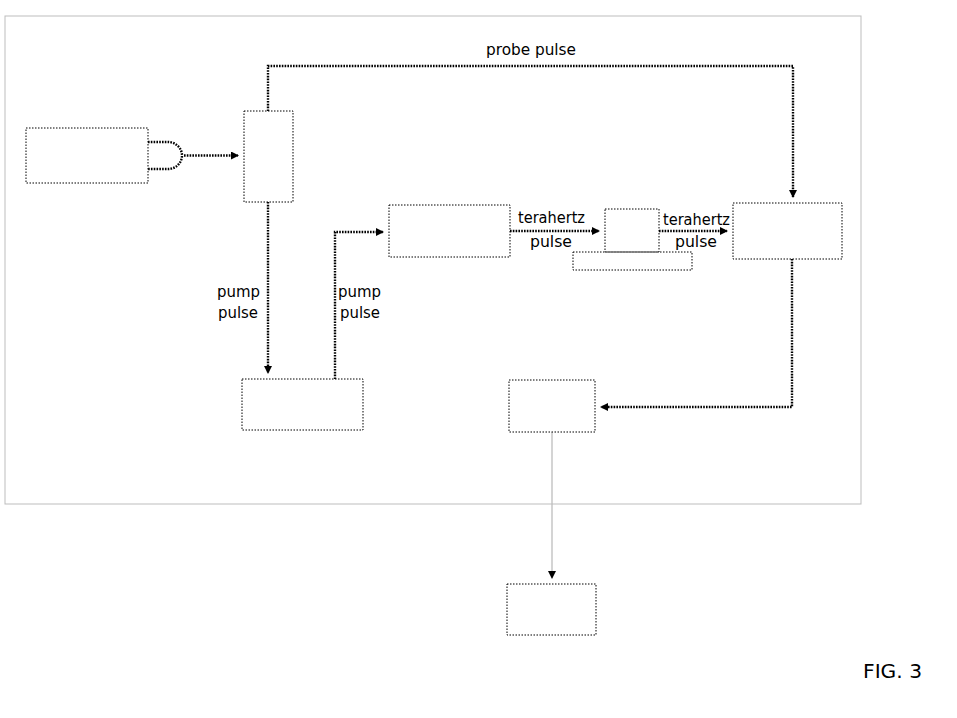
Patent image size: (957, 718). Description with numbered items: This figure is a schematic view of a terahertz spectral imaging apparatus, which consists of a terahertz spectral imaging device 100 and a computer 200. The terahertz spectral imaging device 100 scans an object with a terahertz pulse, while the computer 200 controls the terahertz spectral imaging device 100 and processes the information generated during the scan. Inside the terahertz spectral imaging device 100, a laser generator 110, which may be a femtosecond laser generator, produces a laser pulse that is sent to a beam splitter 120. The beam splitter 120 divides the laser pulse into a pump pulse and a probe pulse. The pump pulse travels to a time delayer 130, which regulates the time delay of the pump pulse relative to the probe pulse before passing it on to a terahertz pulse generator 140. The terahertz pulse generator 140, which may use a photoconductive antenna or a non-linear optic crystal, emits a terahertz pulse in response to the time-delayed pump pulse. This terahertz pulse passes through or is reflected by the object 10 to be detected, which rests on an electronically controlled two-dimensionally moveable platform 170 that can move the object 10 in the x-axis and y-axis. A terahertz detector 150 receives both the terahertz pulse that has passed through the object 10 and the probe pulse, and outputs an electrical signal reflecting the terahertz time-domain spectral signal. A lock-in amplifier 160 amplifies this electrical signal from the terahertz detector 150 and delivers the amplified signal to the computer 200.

The terahertz spectral imaging device 100 is at (130, 506).
The laser generator 110 is at (58, 128).
The beam splitter 120 is at (320, 140).
The time delayer 130 is at (273, 432).
The terahertz pulse generator 140 is at (432, 258).
The object to be detected 10 is at (619, 218).
The electronically controlled two-dimensionally moveable platform 170 is at (617, 262).
The terahertz detector 150 is at (753, 262).
The lock-in amplifier 160 is at (529, 380).
The computer 200 is at (488, 611).